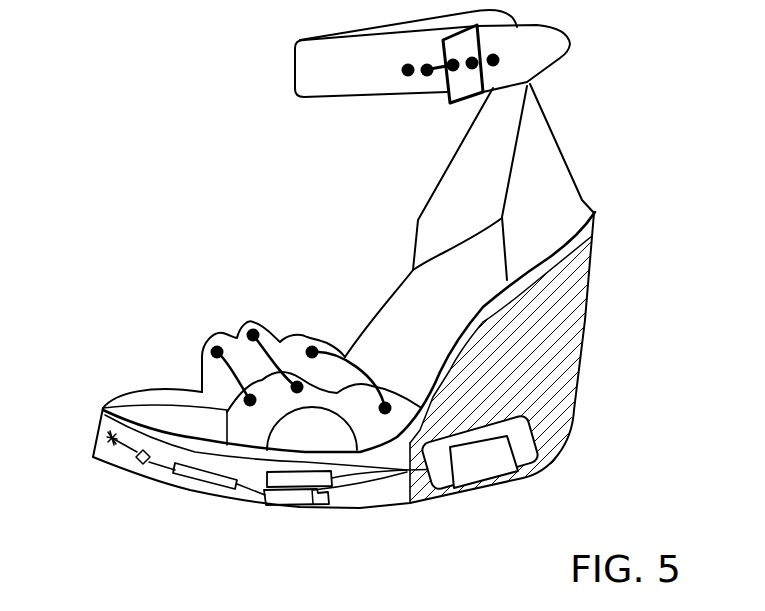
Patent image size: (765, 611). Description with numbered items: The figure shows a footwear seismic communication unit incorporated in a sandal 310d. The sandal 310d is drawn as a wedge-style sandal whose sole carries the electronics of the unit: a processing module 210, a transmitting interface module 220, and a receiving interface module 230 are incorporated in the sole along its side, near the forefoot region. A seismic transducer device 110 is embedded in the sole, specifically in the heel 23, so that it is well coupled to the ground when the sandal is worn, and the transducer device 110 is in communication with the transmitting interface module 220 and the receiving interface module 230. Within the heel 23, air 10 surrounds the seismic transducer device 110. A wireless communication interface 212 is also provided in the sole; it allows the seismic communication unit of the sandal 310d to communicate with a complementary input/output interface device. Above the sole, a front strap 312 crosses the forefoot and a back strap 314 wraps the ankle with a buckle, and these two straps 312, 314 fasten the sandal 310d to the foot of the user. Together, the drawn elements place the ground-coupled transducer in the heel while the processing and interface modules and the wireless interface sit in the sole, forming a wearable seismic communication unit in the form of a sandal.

The sandal 310d is at (114, 122).
The back strap 314 is at (293, 82).
The front strap 312 is at (200, 358).
The wireless communication interface 212 is at (140, 478).
The processing module 210 is at (200, 483).
The transmitting interface module 220 is at (288, 507).
The receiving interface module 230 is at (317, 507).
The seismic transducer device 110 is at (497, 481).
The air 10 is at (537, 442).
The heel 23 is at (557, 396).